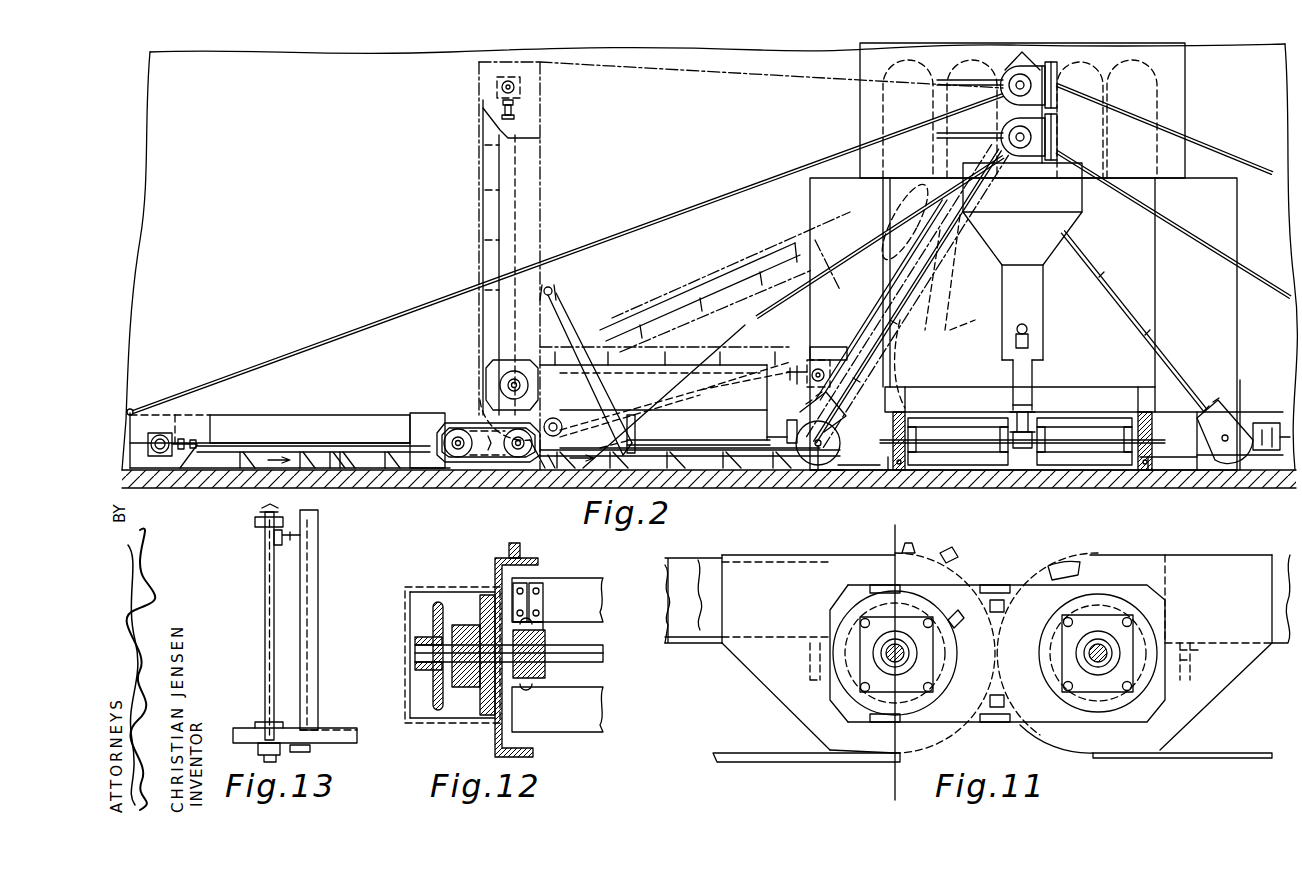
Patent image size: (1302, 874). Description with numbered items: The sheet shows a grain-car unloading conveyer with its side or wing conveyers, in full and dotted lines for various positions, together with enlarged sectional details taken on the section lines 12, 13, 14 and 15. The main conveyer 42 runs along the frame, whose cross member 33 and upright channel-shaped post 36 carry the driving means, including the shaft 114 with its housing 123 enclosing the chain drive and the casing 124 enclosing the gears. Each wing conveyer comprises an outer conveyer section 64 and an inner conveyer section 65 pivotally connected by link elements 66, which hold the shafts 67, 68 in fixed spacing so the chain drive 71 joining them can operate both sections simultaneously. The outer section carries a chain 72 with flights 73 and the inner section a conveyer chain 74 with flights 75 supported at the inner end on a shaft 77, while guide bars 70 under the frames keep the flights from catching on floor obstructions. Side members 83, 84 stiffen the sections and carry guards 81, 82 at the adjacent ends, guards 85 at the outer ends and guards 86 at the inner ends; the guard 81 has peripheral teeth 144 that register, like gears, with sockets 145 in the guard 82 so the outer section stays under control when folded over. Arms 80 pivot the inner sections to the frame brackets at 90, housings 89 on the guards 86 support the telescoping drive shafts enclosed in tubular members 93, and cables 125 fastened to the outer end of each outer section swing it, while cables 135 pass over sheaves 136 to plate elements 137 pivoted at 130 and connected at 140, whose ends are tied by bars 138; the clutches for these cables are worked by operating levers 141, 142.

In FIG. 11, the section line 12- 12 is at (900, 662).
In FIG. 2, the section line 13- 13 is at (137, 440).
In FIG. 2, the section line 14- 14 is at (1180, 366).
In FIG. 2, the elevating conveyor 15 is at (933, 270).
In FIG. 2, the cross member 33 is at (972, 398).
In FIG. 2, the channel-shaped post 36 is at (1045, 378).
In FIG. 2, the main conveyer 42 is at (1096, 412).
In FIG. 2, the outer conveyer section 64 is at (545, 190).
In FIG. 11, the outer conveyer section 64 is at (780, 583).
In FIG. 2, the inner conveyer section 65 is at (712, 480).
In FIG. 11, the inner conveyer section 65 is at (1210, 575).
In FIG. 11, the link element 66 is at (1078, 590).
In FIG. 2, the shaft 67 is at (456, 450).
In FIG. 12, the shaft 67 is at (604, 655).
In FIG. 11, the shaft 67 is at (903, 650).
In FIG. 2, the shaft 68 is at (517, 458).
In FIG. 11, the shaft 68 is at (1090, 650).
In FIG. 2, the guide bar 70 is at (479, 164).
In FIG. 11, the guide bar 70 is at (773, 762).
In FIG. 2, the chain drive 71 is at (492, 458).
In FIG. 2, the chain 72 is at (225, 455).
In FIG. 2, the flight 73 is at (355, 470).
In FIG. 13, the flight 73 is at (312, 642).
In FIG. 12, the flight 73 is at (572, 612).
In FIG. 2, the conveyer chain 74 is at (742, 452).
In FIG. 2, the flight 75 is at (665, 458).
In FIG. 2, the shaft 77 is at (820, 466).
In FIG. 2, the arm 80 is at (1178, 455).
In FIG. 12, the guard 81 is at (495, 568).
In FIG. 11, the guard 81 is at (912, 570).
In FIG. 11, the guard 82 is at (1128, 560).
In FIG. 2, the side member 83 is at (290, 415).
In FIG. 13, the side member 83 is at (357, 738).
In FIG. 11, the side member 83 is at (677, 628).
In FIG. 11, the side member 84 is at (1272, 645).
In FIG. 2, the guard 85 is at (178, 418).
In FIG. 13, the guard 85 is at (235, 728).
In FIG. 2, the guard 86 is at (840, 450).
In FIG. 2, the housing 89 is at (842, 412).
In FIG. 2, the pivotal connection 90 is at (888, 470).
In FIG. 2, the tubular member 93 is at (1130, 302).
In FIG. 2, the shaft 114 is at (1028, 332).
In FIG. 2, the housing 123 is at (1028, 300).
In FIG. 2, the casing 124 is at (1065, 205).
In FIG. 2, the cable 125 is at (1218, 145).
In FIG. 2, the pivot 130 is at (602, 450).
In FIG. 2, the cable 135 is at (862, 245).
In FIG. 2, the sheave 136 is at (541, 450).
In FIG. 2, the plate element 137 is at (570, 310).
In FIG. 2, the bar 138 is at (552, 290).
In FIG. 2, the cable connection 140 is at (553, 418).
In FIG. 2, the operating lever 141 is at (1008, 68).
In FIG. 2, the operating lever 142 is at (1000, 130).
In FIG. 11, the peripheral tooth 144 is at (946, 557).
In FIG. 11, the socket 145 is at (1062, 558).